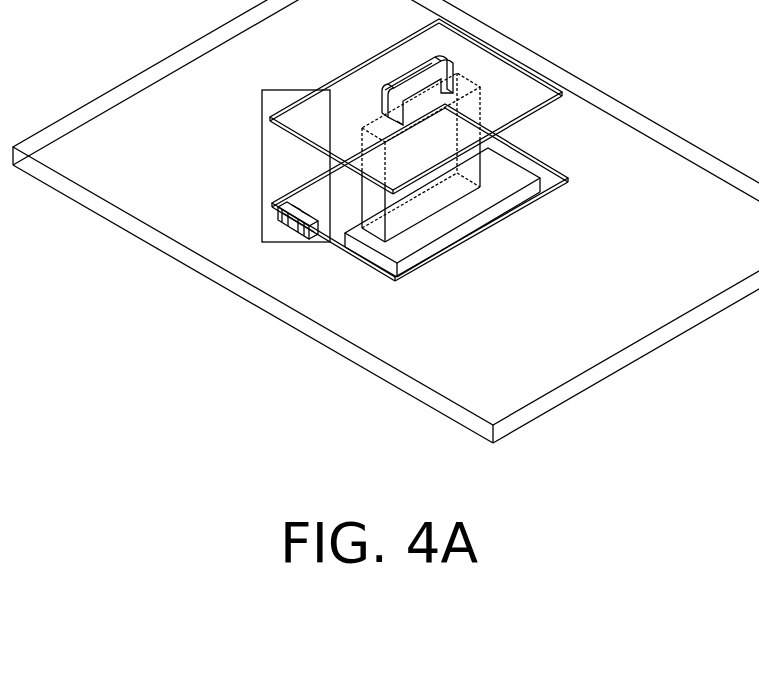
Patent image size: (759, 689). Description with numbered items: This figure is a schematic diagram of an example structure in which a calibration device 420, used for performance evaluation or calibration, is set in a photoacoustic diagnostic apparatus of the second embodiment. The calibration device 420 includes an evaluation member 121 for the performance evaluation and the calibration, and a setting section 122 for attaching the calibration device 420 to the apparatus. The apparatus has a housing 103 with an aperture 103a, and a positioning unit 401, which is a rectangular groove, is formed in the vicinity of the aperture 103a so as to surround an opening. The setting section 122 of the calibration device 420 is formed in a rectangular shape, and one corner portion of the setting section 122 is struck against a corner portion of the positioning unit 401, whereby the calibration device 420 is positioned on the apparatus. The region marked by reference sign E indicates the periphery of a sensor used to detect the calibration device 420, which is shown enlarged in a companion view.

The housing 103 is at (633, 343).
The aperture 103a is at (518, 190).
The positioning unit 401 is at (424, 262).
The calibration device 420 is at (441, 106).
The evaluation member 121 is at (437, 192).
The setting section 122 is at (535, 98).
The periphery of a sensor E is at (290, 243).